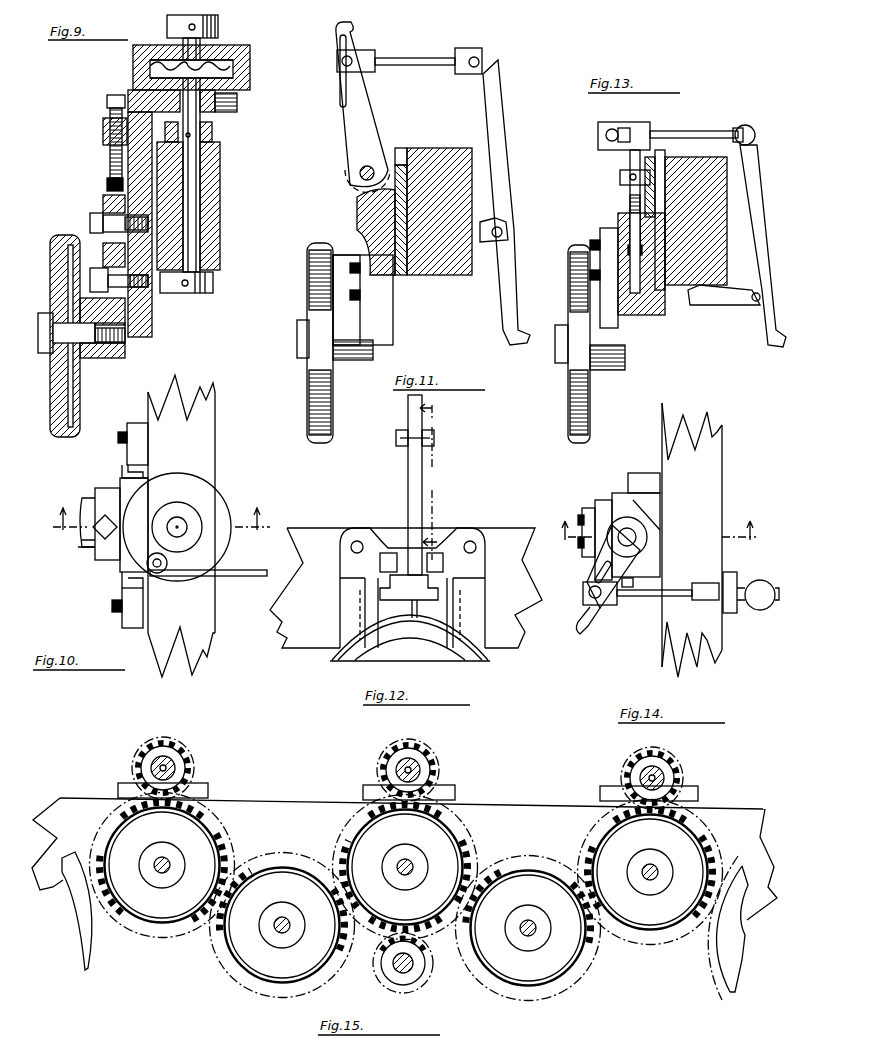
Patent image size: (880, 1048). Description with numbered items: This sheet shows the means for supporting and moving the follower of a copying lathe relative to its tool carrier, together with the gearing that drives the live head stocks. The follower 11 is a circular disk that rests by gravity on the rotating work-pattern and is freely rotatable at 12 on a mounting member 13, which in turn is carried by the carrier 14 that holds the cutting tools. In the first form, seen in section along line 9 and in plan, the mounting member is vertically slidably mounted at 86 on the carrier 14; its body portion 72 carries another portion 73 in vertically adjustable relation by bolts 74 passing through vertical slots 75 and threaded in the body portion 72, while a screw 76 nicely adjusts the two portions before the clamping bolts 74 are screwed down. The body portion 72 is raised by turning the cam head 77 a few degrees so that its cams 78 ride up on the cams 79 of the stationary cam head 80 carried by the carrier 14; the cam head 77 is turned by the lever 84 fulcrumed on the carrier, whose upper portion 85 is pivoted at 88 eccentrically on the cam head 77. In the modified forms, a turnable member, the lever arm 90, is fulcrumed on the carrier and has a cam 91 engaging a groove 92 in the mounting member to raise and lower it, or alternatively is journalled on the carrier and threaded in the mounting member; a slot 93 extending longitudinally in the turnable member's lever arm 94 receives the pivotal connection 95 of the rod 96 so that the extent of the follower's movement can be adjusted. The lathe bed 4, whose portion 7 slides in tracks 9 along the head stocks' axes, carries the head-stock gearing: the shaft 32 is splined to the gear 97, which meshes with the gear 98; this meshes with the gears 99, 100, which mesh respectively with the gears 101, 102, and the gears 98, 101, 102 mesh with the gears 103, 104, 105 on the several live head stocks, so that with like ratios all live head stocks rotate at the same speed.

In FIG. 15, the lathe bed 4 is at (404, 891).
In FIG. 15, the portion carrying the dead head stocks 7 is at (528, 828).
In FIG. 10, the tracks 9 is at (161, 530).
In FIG. 9, the follower 11 is at (80, 457).
In FIG. 11, the follower 11 is at (340, 456).
In FIG. 13, the follower 11 is at (582, 460).
In FIG. 10, the follower 11 is at (80, 455).
In FIG. 12, the follower 11 is at (450, 414).
In FIG. 9, the rotatable mounting of the follower 12 is at (48, 355).
In FIG. 11, the rotatable mounting of the follower 12 is at (300, 360).
In FIG. 13, the rotatable mounting of the follower 12 is at (562, 363).
In FIG. 9, the mounting member 13 is at (108, 360).
In FIG. 10, the mounting member 13 is at (118, 582).
In FIG. 14, the mounting member 13 is at (574, 560).
In FIG. 9, the carrier 14 is at (258, 224).
In FIG. 11, the carrier 14 is at (455, 299).
In FIG. 13, the carrier 14 is at (683, 290).
In FIG. 10, the carrier 14 is at (200, 449).
In FIG. 12, the carrier 14 is at (350, 524).
In FIG. 14, the carrier 14 is at (706, 494).
In FIG. 15, the shaft 32 is at (395, 968).
In FIG. 9, the body portion of the mounting member 72 is at (150, 326).
In FIG. 9, the adjustable portion of the mounting member 73 is at (103, 200).
In FIG. 9, the bolts 74 is at (90, 222).
In FIG. 9, the vertical slots 75 is at (108, 242).
In FIG. 9, the screw 76 is at (107, 100).
In FIG. 10, the screw 76 is at (90, 550).
In FIG. 9, the cam head 77 is at (245, 58).
In FIG. 10, the cam head 77 is at (177, 527).
In FIG. 9, the cams 78 is at (205, 55).
In FIG. 9, the cams 79 is at (145, 72).
In FIG. 9, the stationary cam head 80 is at (237, 103).
In FIG. 10, the lever 84 is at (270, 557).
In FIG. 10, the upper portion of the lever 85 is at (240, 576).
In FIG. 9, the vertical slide mounting 86 is at (152, 280).
In FIG. 10, the vertical slide mounting 86 is at (125, 462).
In FIG. 10, the eccentric pivot 88 is at (167, 563).
In FIG. 11, the lever arm 90 is at (380, 137).
In FIG. 12, the lever arm 90 is at (410, 470).
In FIG. 11, the cam 91 is at (358, 200).
In FIG. 12, the cam 91 is at (440, 585).
In FIG. 12, the groove 92 is at (385, 595).
In FIG. 11, the slot 93 is at (355, 95).
In FIG. 13, the slot 93 is at (640, 122).
In FIG. 14, the slot 93 is at (582, 624).
In FIG. 11, the lever arm 94 is at (373, 100).
In FIG. 13, the lever arm 94 is at (603, 150).
In FIG. 12, the lever arm 94 is at (408, 410).
In FIG. 14, the lever arm 94 is at (585, 612).
In FIG. 11, the pivotal connection 95 is at (340, 73).
In FIG. 13, the pivotal connection 95 is at (618, 122).
In FIG. 12, the pivotal connection 95 is at (434, 440).
In FIG. 14, the pivotal connection 95 is at (583, 593).
In FIG. 11, the rod 96 is at (425, 68).
In FIG. 13, the rod 96 is at (690, 131).
In FIG. 14, the rod 96 is at (660, 596).
In FIG. 15, the gear 97 is at (418, 980).
In FIG. 15, the gear 98 is at (405, 867).
In FIG. 15, the gear 99 is at (282, 925).
In FIG. 15, the gear 100 is at (528, 928).
In FIG. 15, the gear 101 is at (180, 894).
In FIG. 15, the gear 102 is at (654, 853).
In FIG. 15, the gear 103 is at (425, 775).
In FIG. 15, the gear 104 is at (180, 775).
In FIG. 15, the gear 105 is at (665, 787).